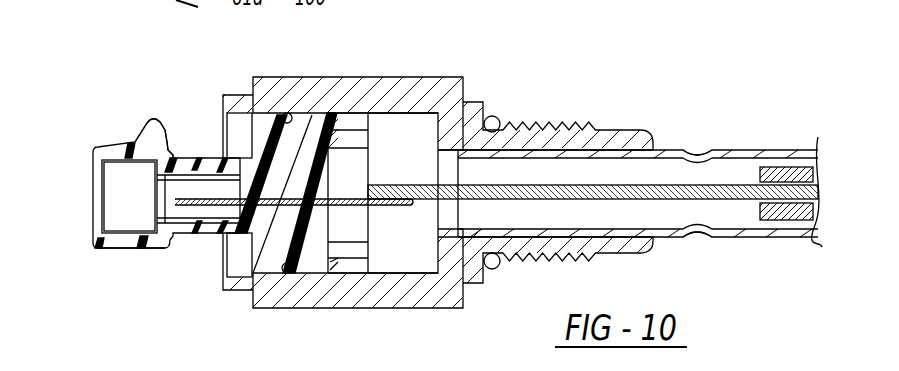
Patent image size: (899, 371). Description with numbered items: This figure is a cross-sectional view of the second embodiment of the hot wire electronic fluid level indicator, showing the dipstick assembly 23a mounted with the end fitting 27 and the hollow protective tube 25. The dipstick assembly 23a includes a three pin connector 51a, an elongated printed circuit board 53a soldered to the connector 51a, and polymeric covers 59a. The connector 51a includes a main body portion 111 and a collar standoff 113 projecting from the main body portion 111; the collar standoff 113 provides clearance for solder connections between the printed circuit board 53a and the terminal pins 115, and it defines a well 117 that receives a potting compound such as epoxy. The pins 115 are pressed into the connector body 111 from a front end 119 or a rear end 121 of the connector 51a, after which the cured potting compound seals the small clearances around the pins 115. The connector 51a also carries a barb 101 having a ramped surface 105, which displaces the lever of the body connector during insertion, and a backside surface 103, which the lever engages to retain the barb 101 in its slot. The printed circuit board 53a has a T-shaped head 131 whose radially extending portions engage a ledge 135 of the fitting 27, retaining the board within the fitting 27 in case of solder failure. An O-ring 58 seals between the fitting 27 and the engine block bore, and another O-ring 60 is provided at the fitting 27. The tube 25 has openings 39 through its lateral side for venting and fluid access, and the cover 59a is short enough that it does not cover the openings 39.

The dipstick assembly 23a is at (72, 194).
The front end 119 is at (112, 175).
The three pin connector 51a is at (128, 243).
The ramped surface 105 is at (135, 135).
The barb 101 is at (155, 122).
The backside surface 103 is at (165, 137).
The end fitting 27 is at (366, 88).
The O-ring 60 is at (287, 112).
The main body portion 111 is at (300, 243).
The rear end 121 is at (350, 162).
The collar standoff 113 is at (345, 263).
The well 117 is at (355, 251).
The T-shaped head 131 is at (440, 132).
The terminal pins 115 is at (392, 200).
The ledge 135 is at (466, 112).
The O-ring 58 is at (498, 116).
The hollow protective tube 25 is at (785, 238).
The openings 39 is at (697, 147).
The printed circuit board 53a is at (733, 200).
The polymeric covers 59a is at (790, 173).